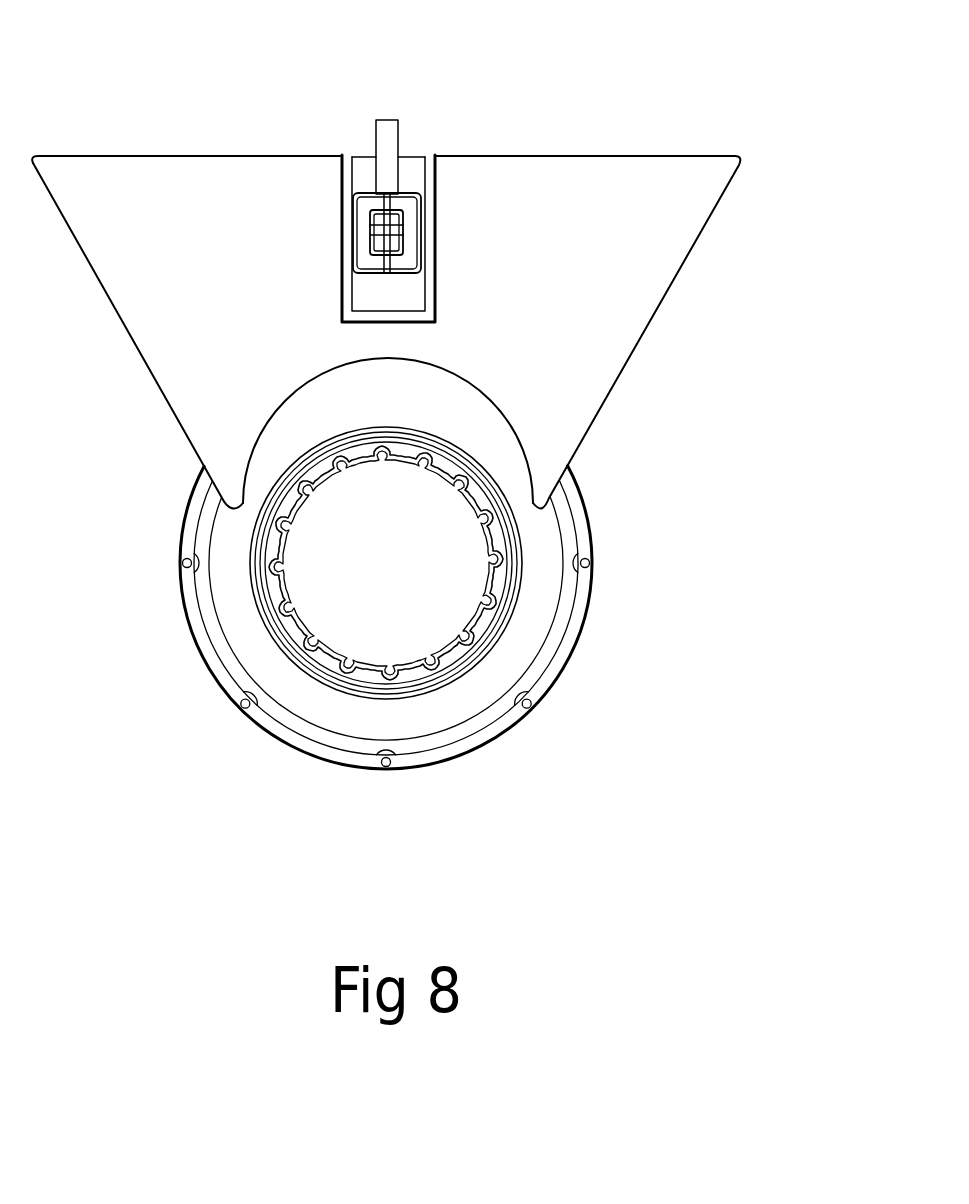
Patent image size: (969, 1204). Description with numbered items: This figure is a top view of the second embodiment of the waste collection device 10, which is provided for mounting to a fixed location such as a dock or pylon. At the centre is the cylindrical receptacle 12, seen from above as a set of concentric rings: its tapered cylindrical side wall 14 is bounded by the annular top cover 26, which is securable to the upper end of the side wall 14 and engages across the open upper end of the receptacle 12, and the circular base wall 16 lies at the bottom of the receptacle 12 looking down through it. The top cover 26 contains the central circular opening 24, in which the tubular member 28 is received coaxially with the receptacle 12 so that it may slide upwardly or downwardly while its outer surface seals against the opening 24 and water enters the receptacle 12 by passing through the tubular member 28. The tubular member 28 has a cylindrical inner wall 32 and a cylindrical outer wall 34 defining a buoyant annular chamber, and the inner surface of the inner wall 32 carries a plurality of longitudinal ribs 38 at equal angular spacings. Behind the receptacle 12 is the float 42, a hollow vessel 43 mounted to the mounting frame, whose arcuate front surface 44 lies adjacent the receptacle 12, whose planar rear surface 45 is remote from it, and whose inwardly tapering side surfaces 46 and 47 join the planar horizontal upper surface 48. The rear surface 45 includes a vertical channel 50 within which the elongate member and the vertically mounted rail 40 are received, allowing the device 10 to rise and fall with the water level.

The waste collection device 10 is at (639, 726).
The receptacle 12 is at (522, 733).
The cylindrical side wall 14 is at (483, 755).
The circular base wall 16 is at (380, 640).
The opening 24 is at (277, 650).
The top cover 26 is at (425, 727).
The tubular member 28 is at (305, 618).
The cylindrical inner wall 32 is at (472, 612).
The cylindrical outer wall 34 is at (248, 565).
The ribs 38 is at (443, 477).
The rail 40 is at (370, 196).
The float 42 is at (653, 263).
The vessel 43 is at (622, 340).
The arcuate front surface 44 is at (291, 408).
The planar rear surface 45 is at (165, 154).
The inwardly tapering side surface 46 is at (715, 228).
The inwardly tapering side surface 47 is at (167, 417).
The planar horizontal upper surface 48 is at (573, 404).
The channel 50 is at (432, 152).